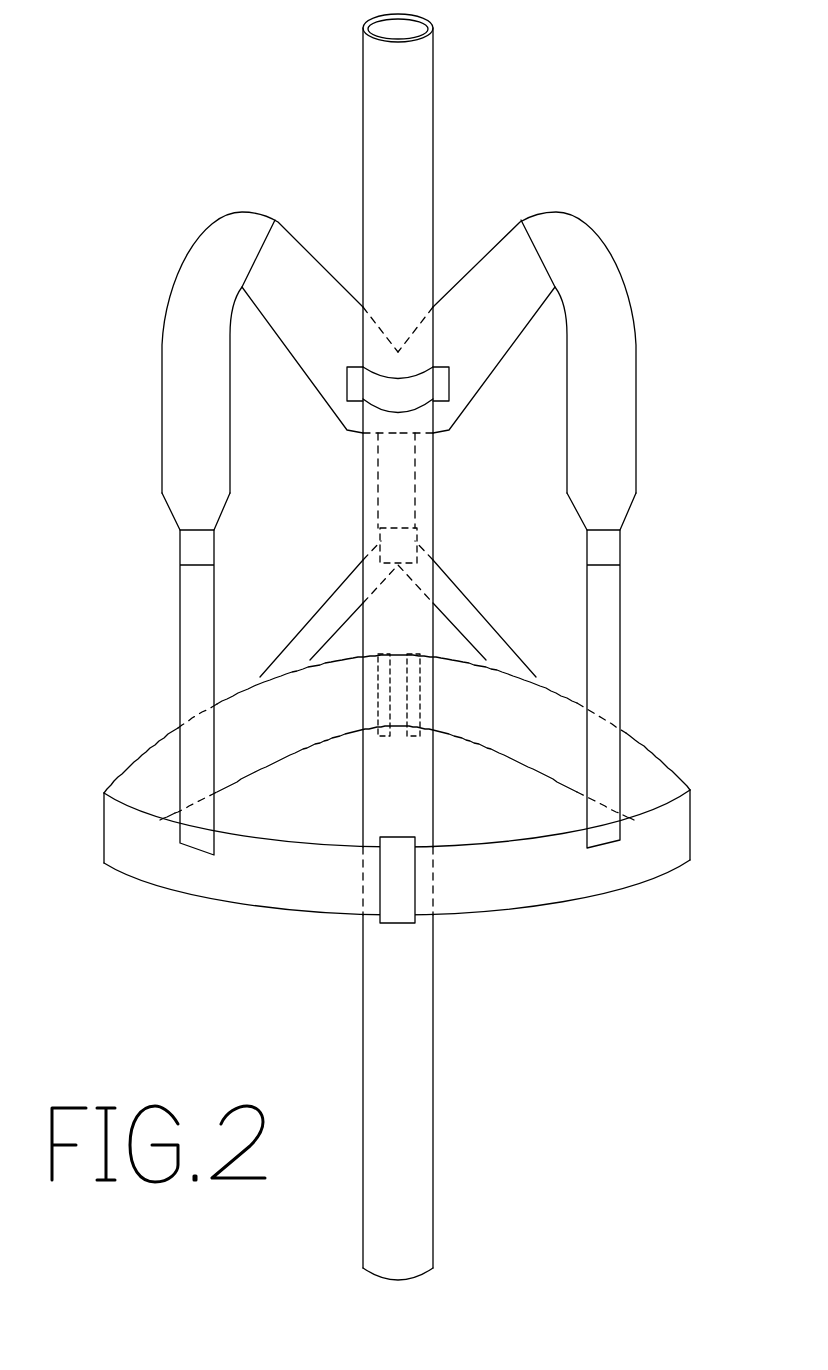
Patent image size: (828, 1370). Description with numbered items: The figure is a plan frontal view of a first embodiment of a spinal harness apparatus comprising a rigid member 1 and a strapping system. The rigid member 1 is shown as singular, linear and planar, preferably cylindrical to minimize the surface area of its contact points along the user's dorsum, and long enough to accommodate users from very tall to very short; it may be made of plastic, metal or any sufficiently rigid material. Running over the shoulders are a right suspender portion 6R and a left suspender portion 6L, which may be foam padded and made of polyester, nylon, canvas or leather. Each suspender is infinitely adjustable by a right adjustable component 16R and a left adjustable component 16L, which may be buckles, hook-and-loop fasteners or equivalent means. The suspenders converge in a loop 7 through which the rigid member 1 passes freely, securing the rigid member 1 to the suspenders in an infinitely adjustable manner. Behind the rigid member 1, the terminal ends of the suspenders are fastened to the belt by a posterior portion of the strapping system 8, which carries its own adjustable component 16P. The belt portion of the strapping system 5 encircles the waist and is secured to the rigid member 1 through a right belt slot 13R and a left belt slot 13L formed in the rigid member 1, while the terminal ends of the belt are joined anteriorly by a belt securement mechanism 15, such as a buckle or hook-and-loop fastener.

The rigid member 1 is at (436, 95).
The belt portion of the strapping system 5 is at (545, 910).
The right suspender portion 6R is at (160, 410).
The left suspender portion 6L is at (651, 415).
The loop in the suspender portion of the strapping system 7 is at (397, 395).
The posterior portion of the strapping system 8 is at (397, 483).
The right belt slot 13R is at (388, 746).
The left belt slot 13L is at (413, 738).
The belt portion of the strapping system securement mechanism 15 is at (400, 933).
The adjustable component for the posterior portion of the strapping system 16P is at (396, 547).
The right adjustable component 16R is at (178, 547).
The left adjustable component 16L is at (631, 544).